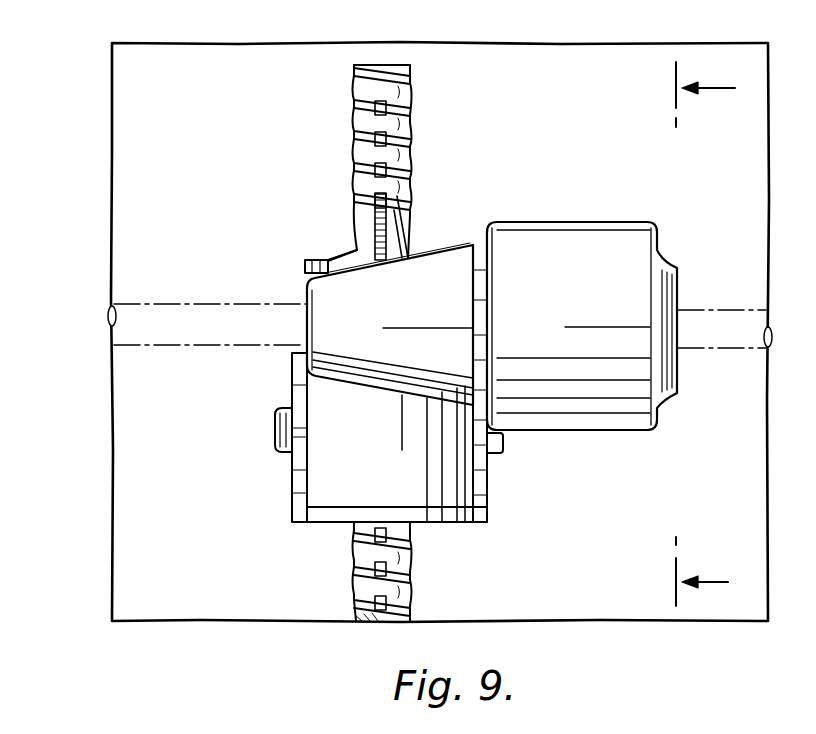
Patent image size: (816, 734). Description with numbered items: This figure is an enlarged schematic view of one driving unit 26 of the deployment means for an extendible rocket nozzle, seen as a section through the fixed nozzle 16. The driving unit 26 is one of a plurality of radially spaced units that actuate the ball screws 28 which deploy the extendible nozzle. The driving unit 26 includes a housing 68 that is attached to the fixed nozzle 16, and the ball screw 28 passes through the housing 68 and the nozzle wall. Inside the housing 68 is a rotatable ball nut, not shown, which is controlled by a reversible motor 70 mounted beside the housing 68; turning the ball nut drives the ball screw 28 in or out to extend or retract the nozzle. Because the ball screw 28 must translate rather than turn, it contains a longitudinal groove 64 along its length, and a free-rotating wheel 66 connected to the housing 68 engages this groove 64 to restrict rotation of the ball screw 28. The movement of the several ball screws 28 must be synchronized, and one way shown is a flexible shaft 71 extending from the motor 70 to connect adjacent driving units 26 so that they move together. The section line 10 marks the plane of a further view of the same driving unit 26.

The section line 10— 10 is at (720, 334).
The fixed nozzle 16 is at (112, 123).
The driving unit 26 is at (313, 232).
The ball screw 28 is at (415, 136).
The longitudinal groove 64 is at (378, 136).
The free-rotating wheel 66 is at (395, 250).
The housing 68 is at (333, 300).
The reversible motor 70 is at (563, 222).
The flexible shaft 71 is at (692, 322).